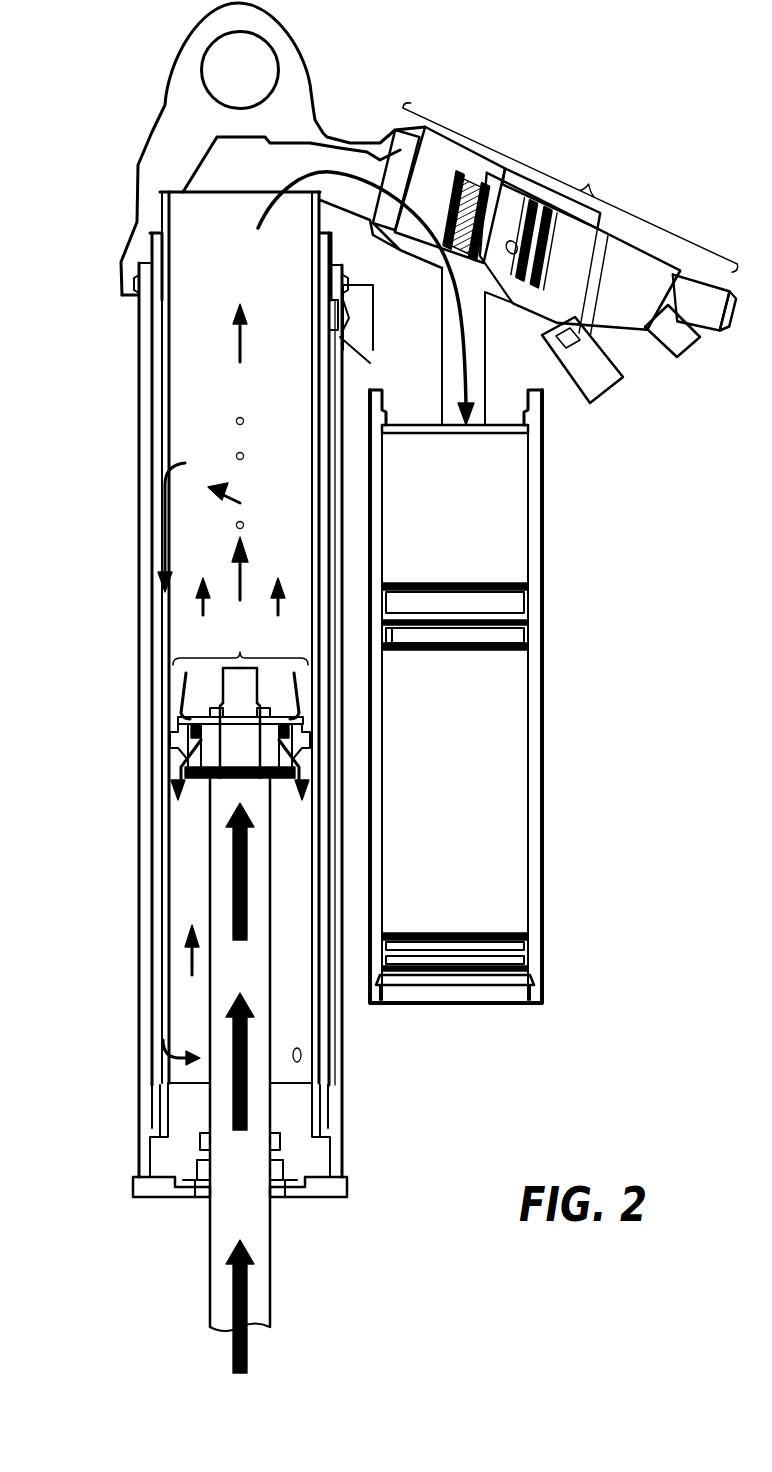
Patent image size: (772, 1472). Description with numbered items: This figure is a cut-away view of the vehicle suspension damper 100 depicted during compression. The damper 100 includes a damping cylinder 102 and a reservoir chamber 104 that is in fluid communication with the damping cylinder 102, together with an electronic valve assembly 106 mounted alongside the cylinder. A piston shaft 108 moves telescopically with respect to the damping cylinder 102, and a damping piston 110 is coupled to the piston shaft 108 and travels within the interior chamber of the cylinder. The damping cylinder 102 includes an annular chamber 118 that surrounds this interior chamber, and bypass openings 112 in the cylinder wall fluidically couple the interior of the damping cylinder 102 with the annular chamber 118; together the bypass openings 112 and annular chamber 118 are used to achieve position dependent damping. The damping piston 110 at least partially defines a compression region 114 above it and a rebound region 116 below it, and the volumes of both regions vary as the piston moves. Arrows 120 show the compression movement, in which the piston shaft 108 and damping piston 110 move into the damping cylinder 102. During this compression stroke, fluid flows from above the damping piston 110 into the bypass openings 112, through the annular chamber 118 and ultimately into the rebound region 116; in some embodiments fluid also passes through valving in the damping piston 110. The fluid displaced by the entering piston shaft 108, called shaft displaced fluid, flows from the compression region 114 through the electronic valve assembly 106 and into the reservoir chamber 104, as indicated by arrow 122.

The vehicle suspension damper 100 is at (136, 52).
The damping cylinder 102 is at (140, 323).
The reservoir chamber 104 is at (544, 832).
The electronic valve assembly 106 is at (556, 248).
The piston shaft 108 is at (270, 1212).
The damping piston 110 is at (234, 631).
The bypass openings 112 is at (236, 524).
The compression region 114 is at (240, 637).
The rebound region 116 is at (341, 982).
The annular chamber 118 is at (150, 641).
The arrows 120 is at (233, 1045).
The arrow 122 is at (468, 382).